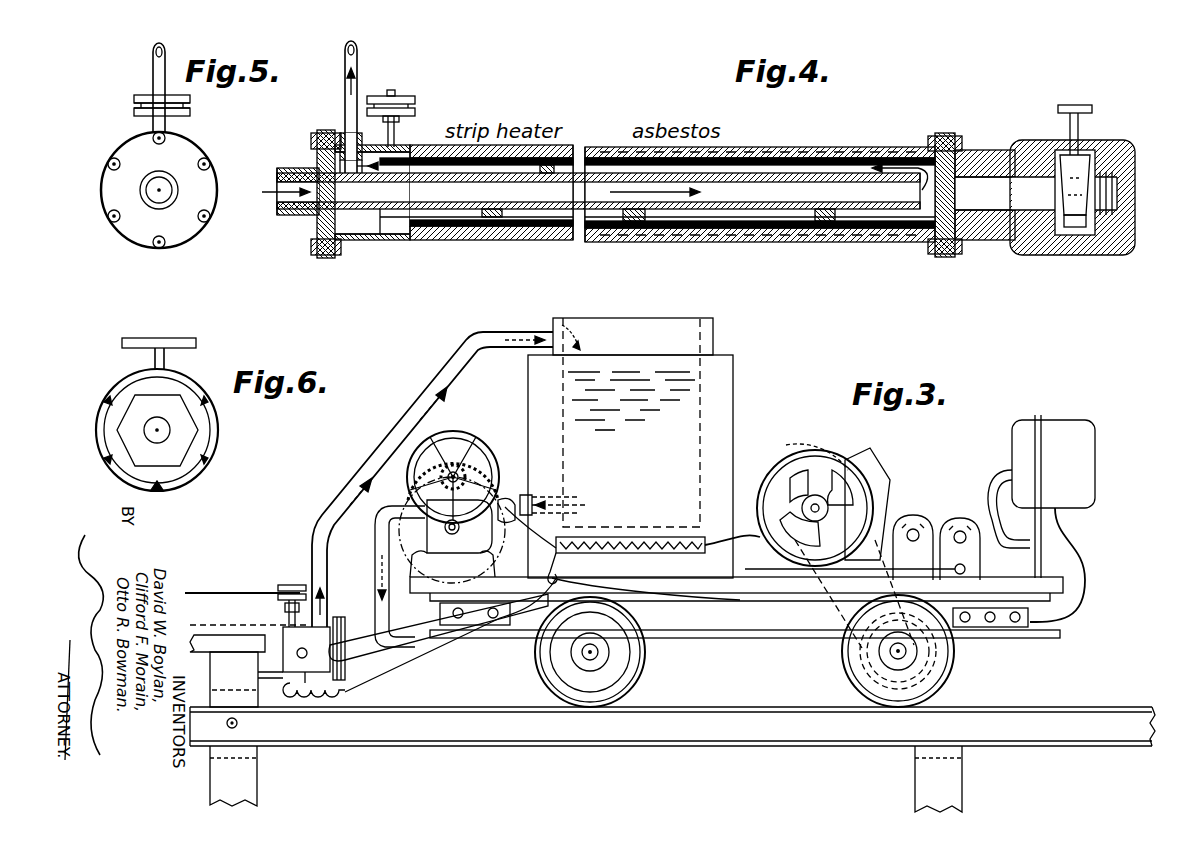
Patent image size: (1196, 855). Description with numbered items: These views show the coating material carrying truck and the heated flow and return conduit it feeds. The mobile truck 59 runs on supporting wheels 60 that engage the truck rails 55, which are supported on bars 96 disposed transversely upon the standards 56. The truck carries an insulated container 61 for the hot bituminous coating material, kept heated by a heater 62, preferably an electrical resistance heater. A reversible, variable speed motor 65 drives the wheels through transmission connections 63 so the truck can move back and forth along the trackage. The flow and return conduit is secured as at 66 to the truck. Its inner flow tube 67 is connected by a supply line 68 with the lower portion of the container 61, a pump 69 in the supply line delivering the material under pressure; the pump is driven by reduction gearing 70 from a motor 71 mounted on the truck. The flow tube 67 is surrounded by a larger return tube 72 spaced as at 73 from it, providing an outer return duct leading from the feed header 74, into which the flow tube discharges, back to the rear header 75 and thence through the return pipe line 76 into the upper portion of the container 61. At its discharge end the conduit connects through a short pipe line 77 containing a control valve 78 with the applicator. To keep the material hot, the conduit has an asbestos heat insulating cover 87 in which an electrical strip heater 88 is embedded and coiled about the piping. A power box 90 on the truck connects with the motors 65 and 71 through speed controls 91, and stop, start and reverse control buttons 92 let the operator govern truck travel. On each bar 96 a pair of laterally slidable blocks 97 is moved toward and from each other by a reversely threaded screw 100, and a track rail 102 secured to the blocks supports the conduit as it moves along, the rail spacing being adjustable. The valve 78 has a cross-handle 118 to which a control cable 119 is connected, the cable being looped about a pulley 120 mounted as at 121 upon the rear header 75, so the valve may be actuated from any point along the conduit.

In FIG. 3, the truck rails 55 is at (1027, 707).
In FIG. 3, the standards 56 is at (257, 798).
In FIG. 3, the mobile truck 59 is at (760, 630).
In FIG. 3, the supporting wheels 60 is at (538, 662).
In FIG. 3, the container 61 is at (733, 440).
In FIG. 3, the heater 62 is at (600, 537).
In FIG. 3, the transmission connections 63 is at (828, 627).
In FIG. 3, the reversible variable speed motor 65 is at (795, 462).
In FIG. 3, the conduit securing point 66 is at (403, 636).
In FIG. 4, the inner flow tube 67 is at (520, 228).
In FIG. 3, the supply line 68 is at (375, 568).
In FIG. 3, the pump 69 is at (437, 528).
In FIG. 3, the reduction gearing 70 is at (462, 470).
In FIG. 3, the motor 71 is at (462, 435).
In FIG. 4, the return tube 72 is at (560, 240).
In FIG. 4, the spacing 73 is at (452, 242).
In FIG. 4, the feed header 74 is at (868, 165).
In FIG. 4, the rear header 75 is at (366, 242).
In FIG. 5, the return pipe line 76 is at (152, 64).
In FIG. 4, the return pipe line 76 is at (358, 65).
In FIG. 3, the return pipe line 76 is at (381, 446).
In FIG. 4, the short pipe line 77 is at (1000, 232).
In FIG. 4, the control valve 78 is at (1082, 243).
In FIG. 6, the control valve 78 is at (151, 395).
In FIG. 4, the heat insulating cover 87 is at (668, 156).
In FIG. 6, the heat insulating cover 87 is at (132, 474).
In FIG. 4, the electrical strip heater 88 is at (548, 140).
In FIG. 3, the power box 90 is at (1041, 518).
In FIG. 3, the speed controls 91 is at (952, 518).
In FIG. 3, the stop, start, and reverse control buttons 92 is at (1000, 628).
In FIG. 3, the bars 96 is at (237, 760).
In FIG. 3, the laterally slidable blocks 97 is at (234, 679).
In FIG. 3, the reversely threaded screw 100 is at (236, 727).
In FIG. 3, the track rail 102 is at (230, 638).
In FIG. 4, the cross-handle 118 is at (1078, 108).
In FIG. 6, the cross-handle 118 is at (130, 339).
In FIG. 3, the control cable 119 is at (202, 593).
In FIG. 5, the pulley 120 is at (134, 100).
In FIG. 4, the pulley 120 is at (402, 96).
In FIG. 3, the pulley 120 is at (288, 585).
In FIG. 4, the pulley mounting 121 is at (396, 133).
In FIG. 3, the pulley mounting 121 is at (290, 608).